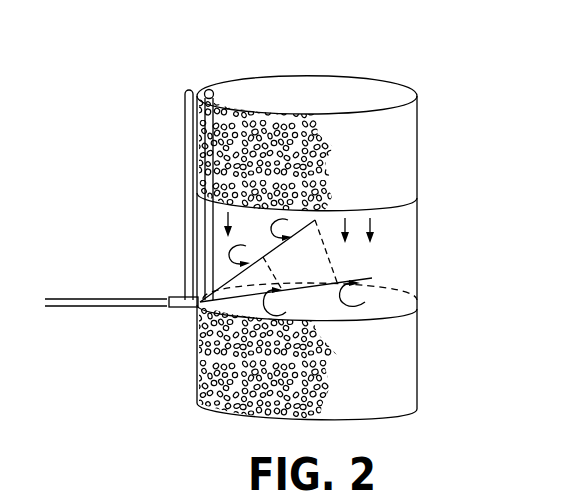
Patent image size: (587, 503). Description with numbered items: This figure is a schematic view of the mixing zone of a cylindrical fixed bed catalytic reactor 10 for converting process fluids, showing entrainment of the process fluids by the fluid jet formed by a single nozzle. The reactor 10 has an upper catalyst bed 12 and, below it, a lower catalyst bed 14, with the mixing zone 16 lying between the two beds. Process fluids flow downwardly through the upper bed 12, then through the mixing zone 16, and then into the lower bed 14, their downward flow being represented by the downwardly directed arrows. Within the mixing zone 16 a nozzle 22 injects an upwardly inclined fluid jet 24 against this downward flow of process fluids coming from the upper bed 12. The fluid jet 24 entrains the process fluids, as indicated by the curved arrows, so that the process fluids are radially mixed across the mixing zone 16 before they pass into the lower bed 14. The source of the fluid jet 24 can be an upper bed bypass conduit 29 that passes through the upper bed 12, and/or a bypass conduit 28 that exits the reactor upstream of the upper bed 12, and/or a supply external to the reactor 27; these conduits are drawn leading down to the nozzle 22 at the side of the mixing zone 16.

The cylindrical fixed bed catalytic reactor 10 is at (441, 175).
The upper catalyst bed 12 is at (333, 148).
The lower catalyst bed 14 is at (330, 386).
The mixing zone 16 is at (398, 255).
The nozzle 22 is at (195, 309).
The fluid jet 24 is at (212, 272).
The supply external to the reactor 27 is at (93, 307).
The bypass conduit 28 is at (182, 130).
The upper bed bypass conduit 29 is at (208, 88).